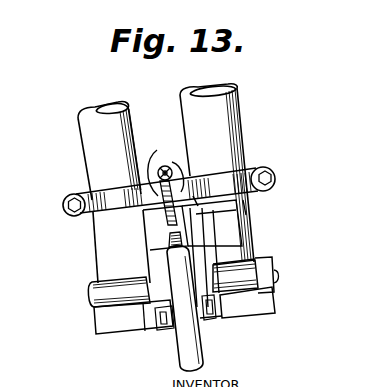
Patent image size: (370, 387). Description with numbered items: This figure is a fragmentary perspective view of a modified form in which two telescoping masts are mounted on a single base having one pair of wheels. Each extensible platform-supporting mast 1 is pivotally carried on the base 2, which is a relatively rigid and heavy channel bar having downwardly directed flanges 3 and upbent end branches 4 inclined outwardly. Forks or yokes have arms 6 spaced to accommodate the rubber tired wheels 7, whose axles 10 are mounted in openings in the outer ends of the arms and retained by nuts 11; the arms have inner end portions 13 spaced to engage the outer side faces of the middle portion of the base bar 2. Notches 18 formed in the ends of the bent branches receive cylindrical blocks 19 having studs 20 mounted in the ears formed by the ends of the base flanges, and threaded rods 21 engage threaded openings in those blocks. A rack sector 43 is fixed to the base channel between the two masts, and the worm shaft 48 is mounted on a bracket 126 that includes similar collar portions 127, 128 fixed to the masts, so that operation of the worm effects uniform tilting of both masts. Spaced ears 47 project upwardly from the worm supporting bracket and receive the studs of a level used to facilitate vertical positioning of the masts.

The extensible platform-supporting mast 1 is at (222, 158).
The base 2 is at (206, 240).
The downwardly directed flanges 3 is at (140, 240).
The upbent end branches 4 is at (142, 258).
The arms 6 is at (208, 322).
The rubber tired wheels 7 is at (180, 352).
The axles 10 is at (158, 323).
The nuts 11 is at (221, 318).
The inner end portions 13 is at (223, 305).
The notches 18 is at (200, 250).
The cylindrical blocks 19 is at (190, 220).
The studs 20 is at (246, 205).
The threaded rods 21 is at (161, 171).
The rack segment 43 is at (167, 166).
The spaced ears 47 is at (159, 164).
The worm shaft 48 is at (162, 164).
The bracket 126 is at (137, 190).
The collar portion 127 is at (253, 166).
The collar portion 128 is at (78, 215).